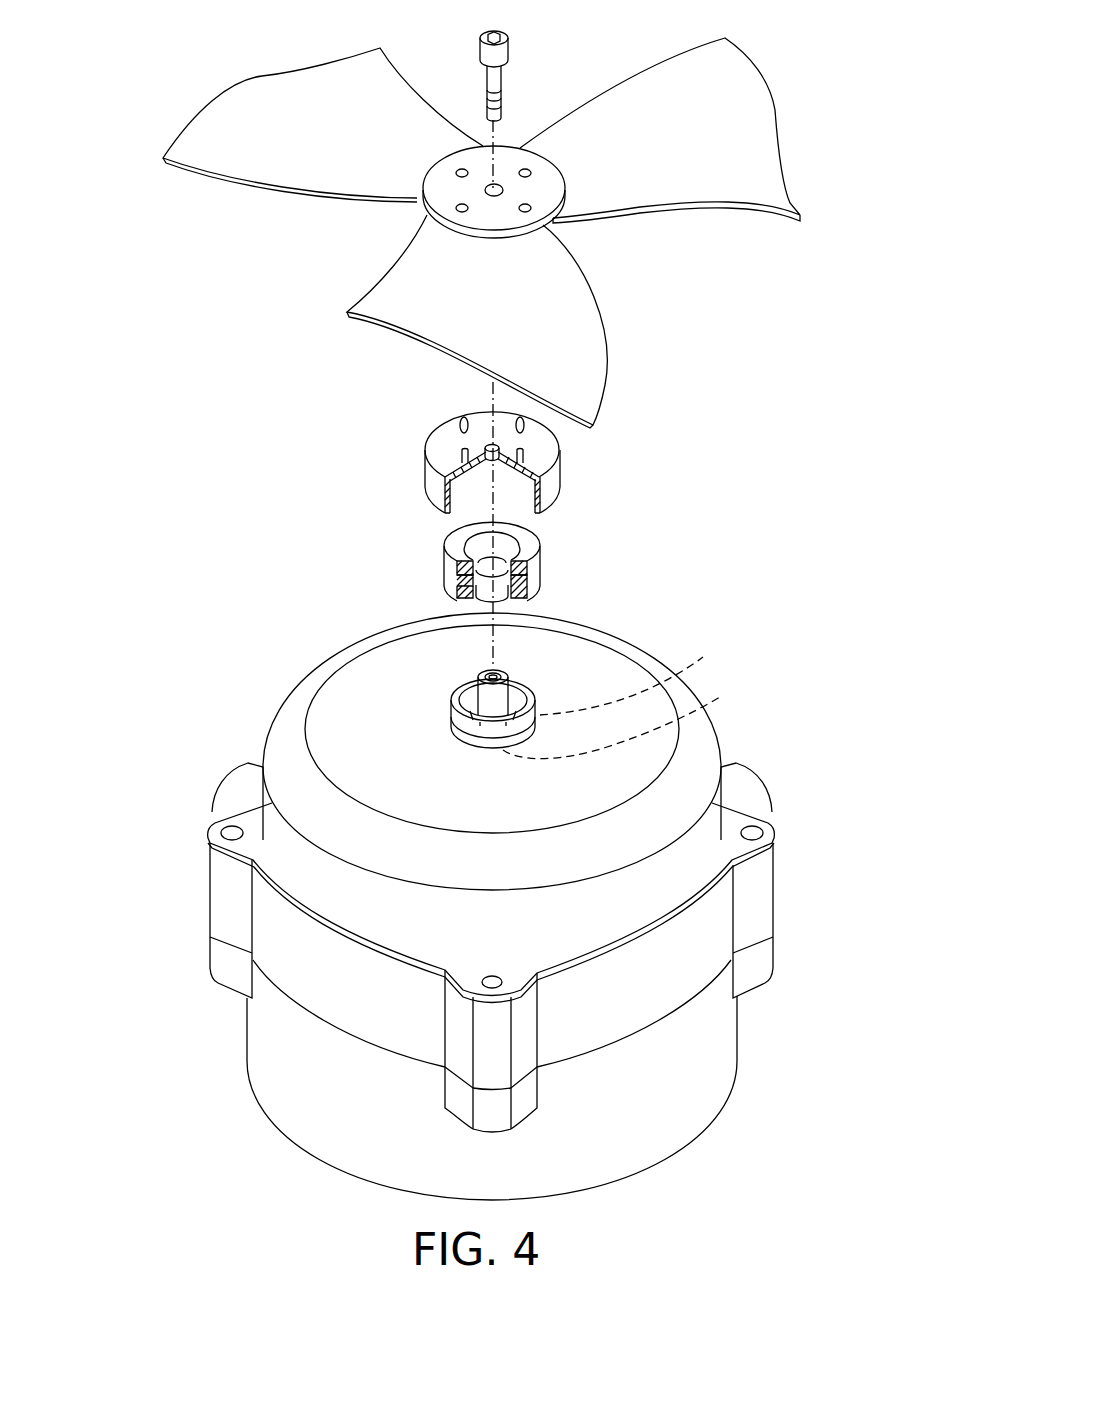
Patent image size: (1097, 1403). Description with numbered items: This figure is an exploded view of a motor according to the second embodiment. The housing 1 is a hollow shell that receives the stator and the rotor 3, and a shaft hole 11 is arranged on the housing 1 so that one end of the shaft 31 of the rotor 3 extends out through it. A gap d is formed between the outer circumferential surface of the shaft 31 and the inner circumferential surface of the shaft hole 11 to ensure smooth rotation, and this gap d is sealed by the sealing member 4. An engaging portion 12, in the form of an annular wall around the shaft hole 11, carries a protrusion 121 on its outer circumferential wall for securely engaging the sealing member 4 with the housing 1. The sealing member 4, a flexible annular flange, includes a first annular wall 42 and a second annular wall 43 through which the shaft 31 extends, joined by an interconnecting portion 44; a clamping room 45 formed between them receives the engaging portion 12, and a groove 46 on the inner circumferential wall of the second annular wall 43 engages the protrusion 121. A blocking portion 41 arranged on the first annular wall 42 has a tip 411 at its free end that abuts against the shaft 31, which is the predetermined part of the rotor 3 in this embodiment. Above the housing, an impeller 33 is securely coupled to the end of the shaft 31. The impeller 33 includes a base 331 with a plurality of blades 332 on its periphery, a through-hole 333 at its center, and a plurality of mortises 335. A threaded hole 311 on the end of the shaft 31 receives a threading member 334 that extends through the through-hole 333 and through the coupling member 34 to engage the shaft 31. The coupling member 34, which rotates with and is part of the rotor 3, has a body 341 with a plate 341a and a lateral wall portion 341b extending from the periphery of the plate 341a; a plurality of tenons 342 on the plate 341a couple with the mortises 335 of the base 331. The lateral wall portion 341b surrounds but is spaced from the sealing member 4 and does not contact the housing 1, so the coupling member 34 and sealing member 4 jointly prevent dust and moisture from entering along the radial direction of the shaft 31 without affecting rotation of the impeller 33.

The housing 1 is at (790, 810).
The shaft hole 11 is at (720, 697).
The engaging portion 12 is at (530, 688).
The protrusion 121 is at (466, 722).
The rotor 3 is at (496, 644).
The shaft 31 is at (480, 690).
The threaded hole 311 is at (503, 682).
The impeller 33 is at (632, 326).
The base 331 is at (447, 168).
The blades 332 is at (747, 195).
The through-hole 333 is at (488, 190).
The threading member 334 is at (503, 72).
The mortises 335 is at (525, 207).
The coupling member 34 is at (410, 433).
The body 341 is at (677, 434).
The plate 341a is at (541, 449).
The lateral wall portion 341b is at (551, 487).
The tenons 342 is at (462, 421).
The sealing member 4 is at (436, 518).
The blocking portion 41 is at (525, 588).
The tip 411 is at (508, 562).
The first annular wall 42 is at (460, 570).
The second annular wall 43 is at (458, 583).
The interconnecting portion 44 is at (456, 560).
The clamping room 45 is at (521, 571).
The groove 46 is at (528, 585).
The gap d is at (614, 698).